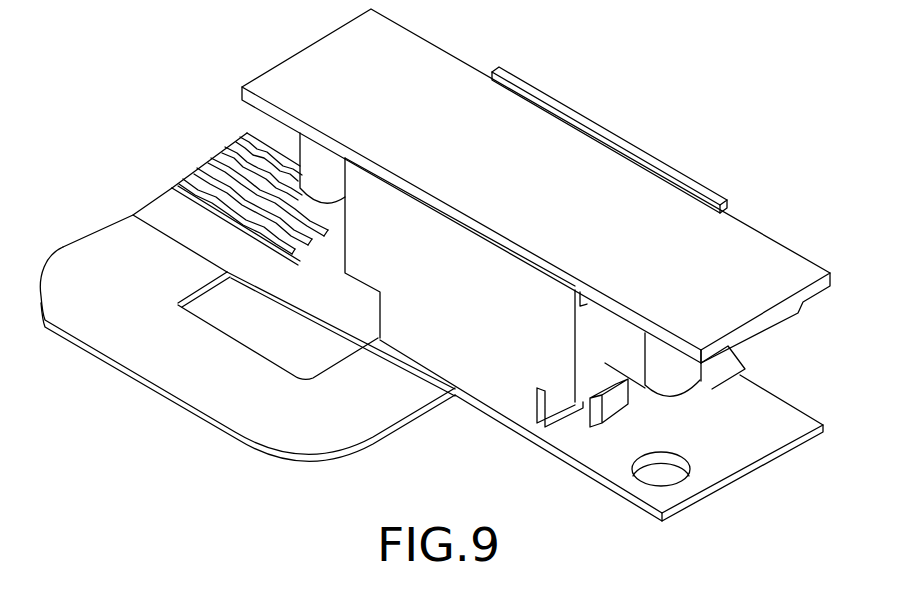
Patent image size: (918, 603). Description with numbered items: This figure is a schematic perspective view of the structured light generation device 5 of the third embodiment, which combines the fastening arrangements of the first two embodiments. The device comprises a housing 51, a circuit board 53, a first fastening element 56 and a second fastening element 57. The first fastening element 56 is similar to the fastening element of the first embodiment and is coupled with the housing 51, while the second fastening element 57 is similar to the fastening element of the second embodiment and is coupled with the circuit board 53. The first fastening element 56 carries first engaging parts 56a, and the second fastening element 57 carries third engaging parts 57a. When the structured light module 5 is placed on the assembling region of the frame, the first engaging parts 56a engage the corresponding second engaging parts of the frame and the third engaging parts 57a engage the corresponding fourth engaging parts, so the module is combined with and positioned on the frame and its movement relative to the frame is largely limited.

The structured light generation device 5 is at (738, 92).
The housing 51 is at (355, 229).
The circuit board 53 is at (190, 385).
The first fastening element 56 is at (747, 253).
The first engaging part 56a is at (315, 157).
The second fastening element 57 is at (777, 427).
The third engaging part 57a is at (667, 465).